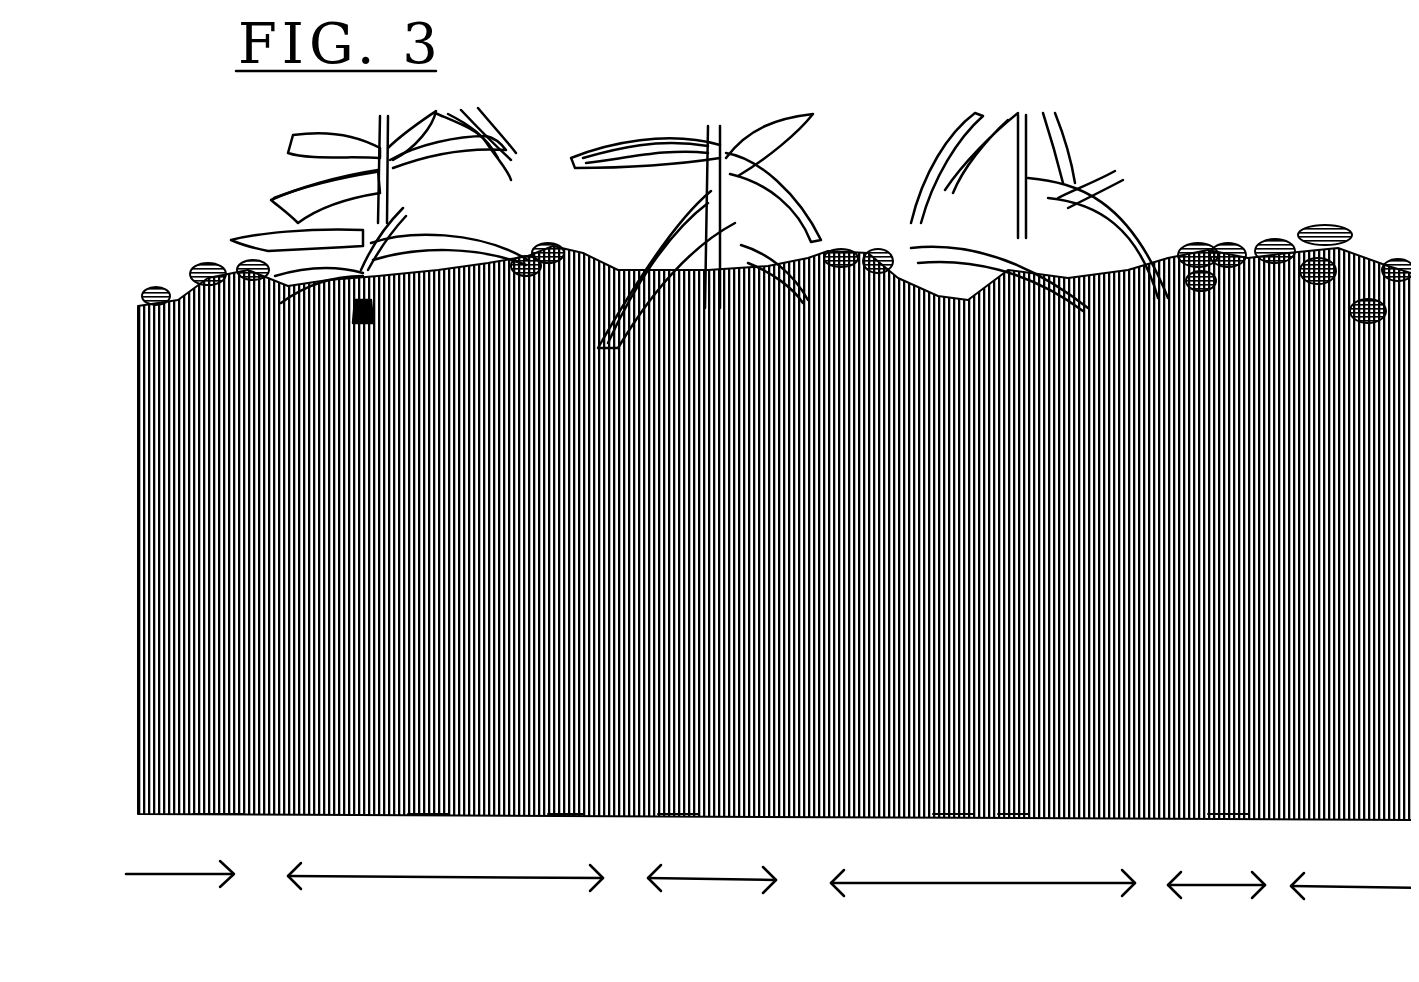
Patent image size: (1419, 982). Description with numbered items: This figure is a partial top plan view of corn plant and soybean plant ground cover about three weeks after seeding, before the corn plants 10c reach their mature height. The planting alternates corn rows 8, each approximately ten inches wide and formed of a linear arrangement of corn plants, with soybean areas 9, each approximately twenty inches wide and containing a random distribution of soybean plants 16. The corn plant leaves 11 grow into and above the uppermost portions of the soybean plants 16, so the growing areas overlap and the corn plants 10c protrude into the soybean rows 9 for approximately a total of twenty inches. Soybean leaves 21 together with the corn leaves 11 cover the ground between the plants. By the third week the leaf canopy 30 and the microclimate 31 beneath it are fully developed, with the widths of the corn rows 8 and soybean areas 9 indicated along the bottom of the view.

The corn plants 10c is at (292, 130).
The corn plant leaves 11 is at (300, 192).
The soybean plants 16 is at (548, 244).
The soybean leaves 21 is at (1338, 225).
The leaf canopy 30 is at (418, 806).
The microclimate 31 is at (196, 806).
The corn row 8 is at (695, 895).
The soybean area 9 is at (849, 898).